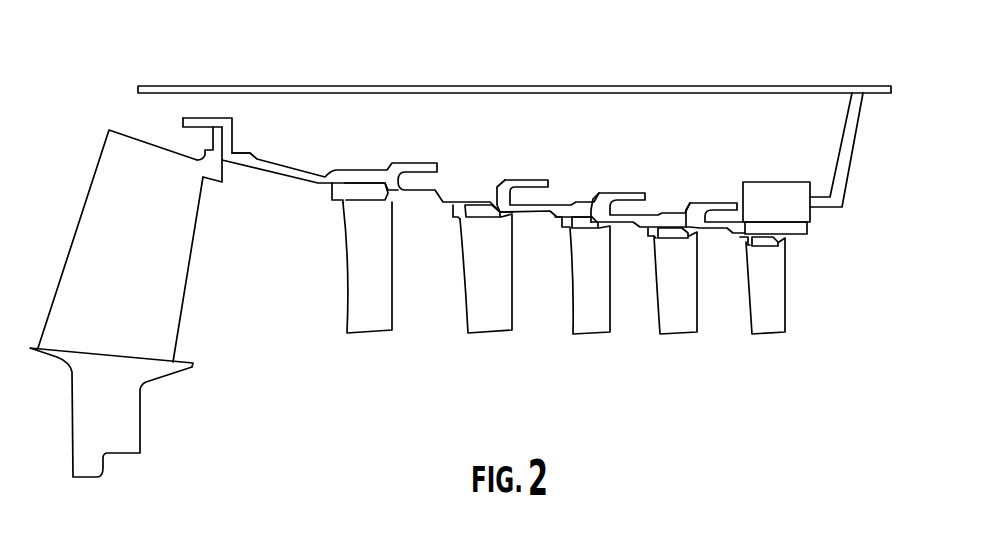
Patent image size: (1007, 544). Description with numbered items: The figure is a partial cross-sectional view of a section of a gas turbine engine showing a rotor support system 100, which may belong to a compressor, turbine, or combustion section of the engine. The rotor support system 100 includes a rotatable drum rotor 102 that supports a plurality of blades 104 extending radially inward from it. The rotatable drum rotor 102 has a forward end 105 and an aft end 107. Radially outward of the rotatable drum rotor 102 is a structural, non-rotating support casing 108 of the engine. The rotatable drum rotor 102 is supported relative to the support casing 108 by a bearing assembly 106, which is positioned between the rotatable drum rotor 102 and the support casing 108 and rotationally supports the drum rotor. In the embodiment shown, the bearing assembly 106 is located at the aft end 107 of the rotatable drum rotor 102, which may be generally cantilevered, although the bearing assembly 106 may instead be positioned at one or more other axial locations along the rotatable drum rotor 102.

The rotor support system 100 is at (885, 145).
The rotatable drum rotor 102 is at (373, 167).
The blades 104 is at (467, 307).
The forward end 105 is at (203, 117).
The bearing assembly 106 is at (842, 208).
The aft end 107 is at (809, 231).
The support casing 108 is at (477, 83).